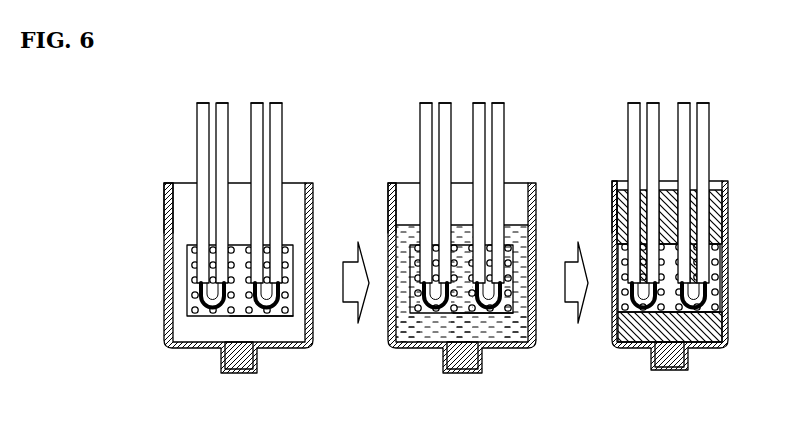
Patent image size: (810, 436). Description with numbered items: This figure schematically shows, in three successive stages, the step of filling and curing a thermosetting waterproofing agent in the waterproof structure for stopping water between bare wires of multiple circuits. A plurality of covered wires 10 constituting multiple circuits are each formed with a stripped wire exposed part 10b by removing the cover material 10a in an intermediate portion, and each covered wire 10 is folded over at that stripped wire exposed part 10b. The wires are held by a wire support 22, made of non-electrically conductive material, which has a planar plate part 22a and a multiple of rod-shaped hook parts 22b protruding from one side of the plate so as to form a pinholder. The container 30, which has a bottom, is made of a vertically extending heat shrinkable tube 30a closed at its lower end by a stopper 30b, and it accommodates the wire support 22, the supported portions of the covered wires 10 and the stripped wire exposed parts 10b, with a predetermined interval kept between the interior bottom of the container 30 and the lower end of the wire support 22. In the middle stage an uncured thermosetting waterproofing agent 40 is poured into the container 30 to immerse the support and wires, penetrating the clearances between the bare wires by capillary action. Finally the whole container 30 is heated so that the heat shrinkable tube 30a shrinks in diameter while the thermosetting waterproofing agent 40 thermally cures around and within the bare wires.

The covered wire 10 is at (189, 119).
The cover material 10a is at (219, 139).
The stripped wire exposed part 10b is at (205, 307).
The wire support 22 is at (218, 328).
The planar plate part 22a is at (258, 313).
The rod-shaped hook parts 22b is at (226, 274).
The container 30 is at (170, 354).
The heat shrinkable tube 30a is at (168, 196).
The stopper 30b is at (240, 375).
The thermosetting waterproofing agent 40 is at (460, 225).